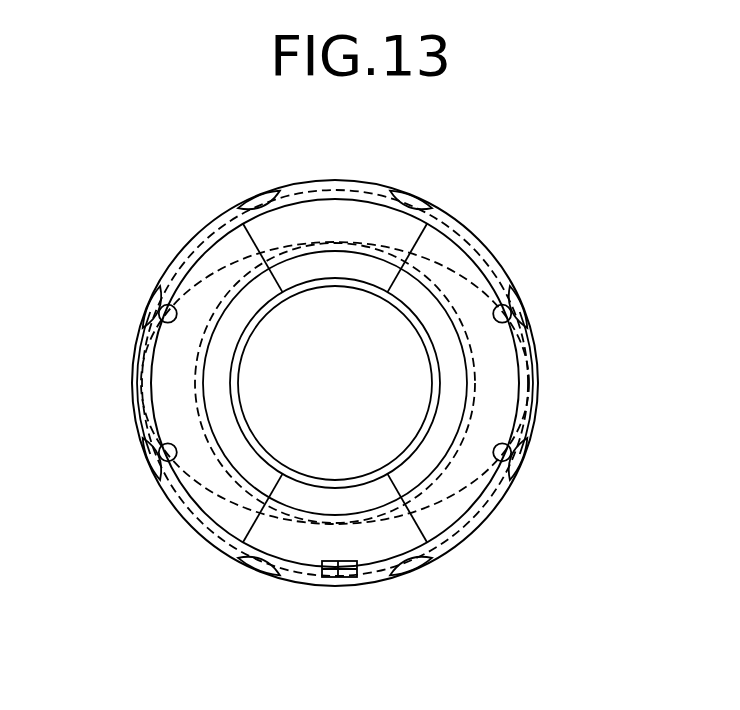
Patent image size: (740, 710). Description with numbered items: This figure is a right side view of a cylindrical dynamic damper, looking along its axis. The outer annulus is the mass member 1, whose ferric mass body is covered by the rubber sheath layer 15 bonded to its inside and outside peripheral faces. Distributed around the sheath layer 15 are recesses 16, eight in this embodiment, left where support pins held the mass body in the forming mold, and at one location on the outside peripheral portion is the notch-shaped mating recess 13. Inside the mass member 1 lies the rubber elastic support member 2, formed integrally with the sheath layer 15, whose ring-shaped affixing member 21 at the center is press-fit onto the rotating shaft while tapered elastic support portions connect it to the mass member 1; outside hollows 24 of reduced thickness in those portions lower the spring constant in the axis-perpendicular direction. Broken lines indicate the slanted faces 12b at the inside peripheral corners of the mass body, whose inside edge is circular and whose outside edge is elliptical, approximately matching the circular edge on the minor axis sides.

The mass member 1 is at (326, 175).
The rubber elastic support member 2 is at (324, 291).
The slanted faces 12b is at (173, 375).
The mating recess 13 is at (340, 587).
The rubber sheath layer 15 is at (192, 240).
The recesses 16 is at (260, 196).
The ring-shaped affixing members 21 is at (255, 443).
The outside hollows 24 is at (140, 398).